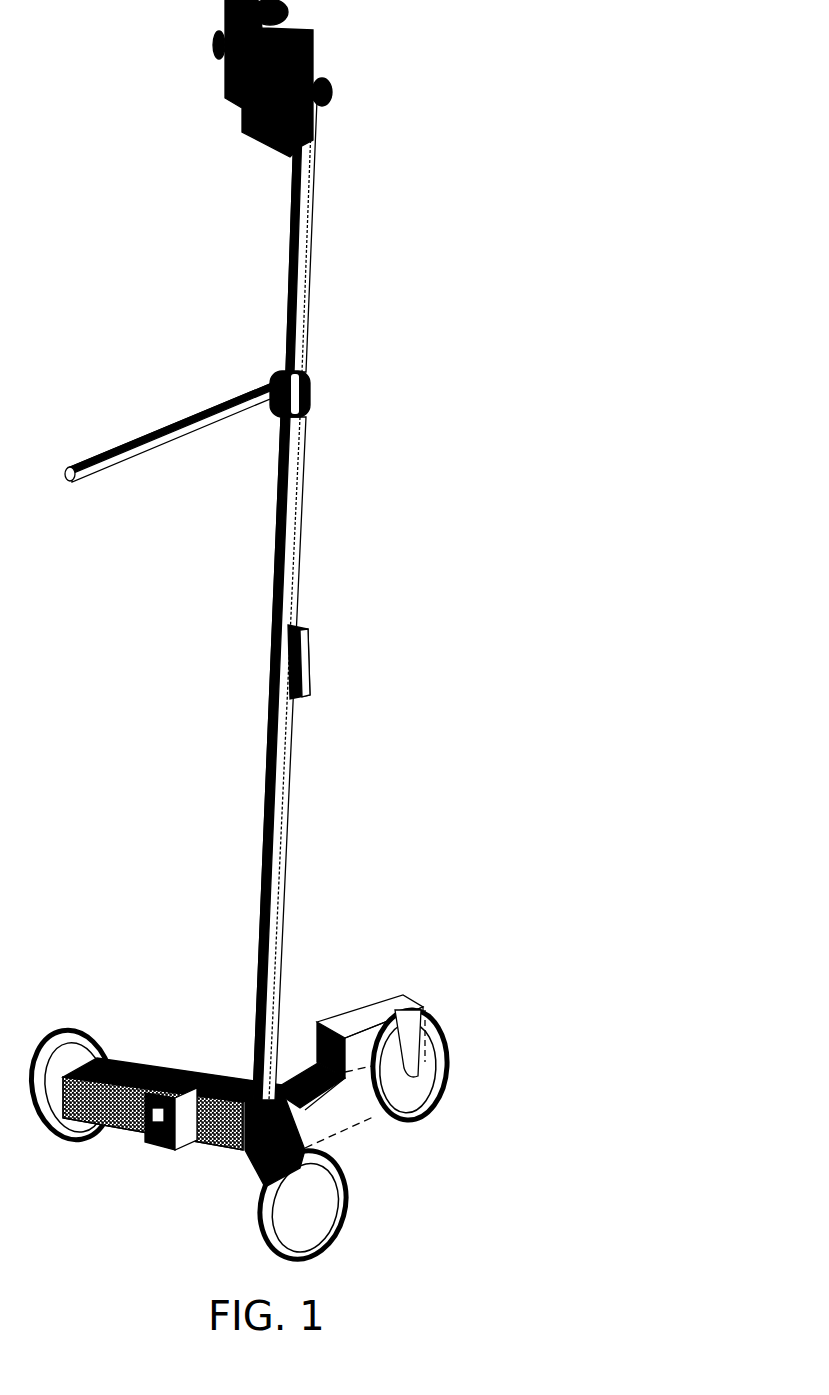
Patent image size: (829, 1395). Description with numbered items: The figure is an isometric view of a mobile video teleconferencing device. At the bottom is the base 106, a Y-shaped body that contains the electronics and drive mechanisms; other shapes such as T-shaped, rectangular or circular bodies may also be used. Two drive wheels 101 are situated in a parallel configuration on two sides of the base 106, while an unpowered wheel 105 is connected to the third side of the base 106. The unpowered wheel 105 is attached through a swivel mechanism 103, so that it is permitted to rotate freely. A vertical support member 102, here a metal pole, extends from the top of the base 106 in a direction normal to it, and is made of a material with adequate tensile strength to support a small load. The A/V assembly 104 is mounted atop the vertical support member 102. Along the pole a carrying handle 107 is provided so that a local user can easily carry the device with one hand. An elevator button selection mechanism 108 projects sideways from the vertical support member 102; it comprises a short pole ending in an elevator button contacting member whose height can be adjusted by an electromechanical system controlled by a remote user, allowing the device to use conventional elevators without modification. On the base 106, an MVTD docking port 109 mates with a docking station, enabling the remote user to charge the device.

The drive wheels 101 is at (262, 1228).
The vertical support member 102 is at (272, 908).
The swivel mechanism 103 is at (423, 1010).
The A/V assembly 104 is at (265, 72).
The unpowered wheel 105 is at (420, 1101).
The base 106 is at (270, 1113).
The carrying handle 107 is at (300, 675).
The elevator button selection mechanism 108 is at (170, 442).
The MVTD docking port 109 is at (165, 1108).